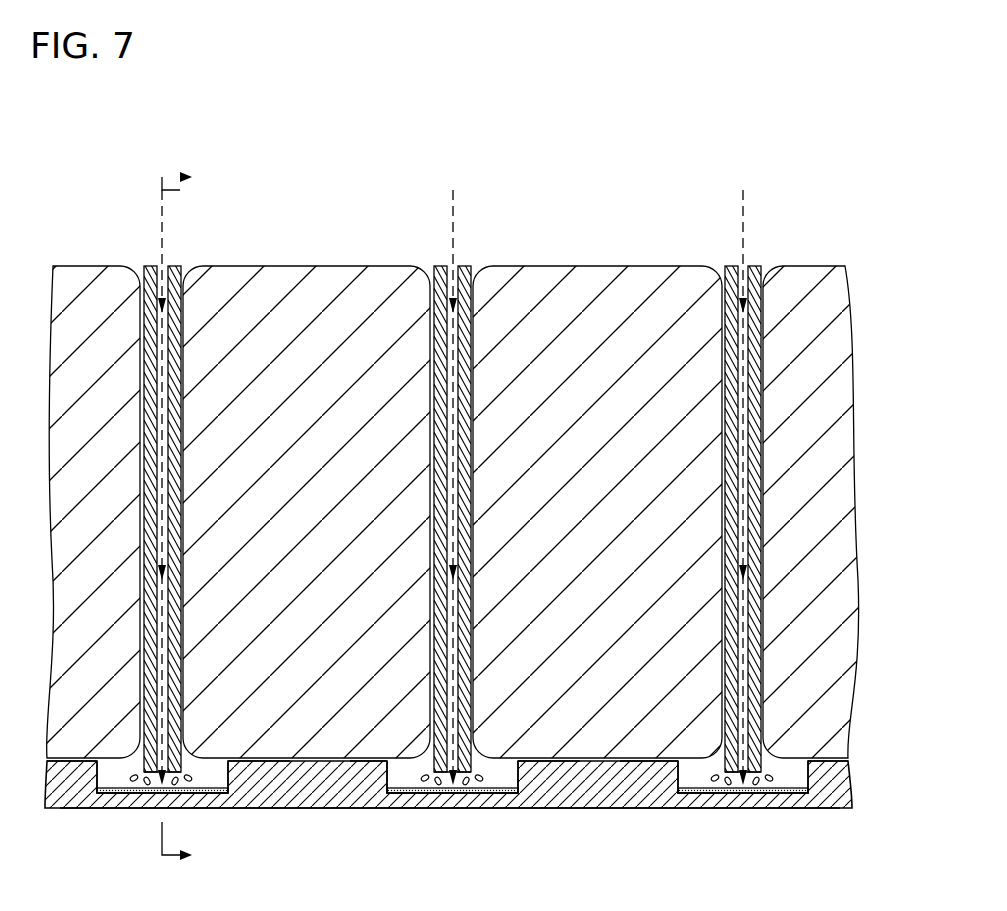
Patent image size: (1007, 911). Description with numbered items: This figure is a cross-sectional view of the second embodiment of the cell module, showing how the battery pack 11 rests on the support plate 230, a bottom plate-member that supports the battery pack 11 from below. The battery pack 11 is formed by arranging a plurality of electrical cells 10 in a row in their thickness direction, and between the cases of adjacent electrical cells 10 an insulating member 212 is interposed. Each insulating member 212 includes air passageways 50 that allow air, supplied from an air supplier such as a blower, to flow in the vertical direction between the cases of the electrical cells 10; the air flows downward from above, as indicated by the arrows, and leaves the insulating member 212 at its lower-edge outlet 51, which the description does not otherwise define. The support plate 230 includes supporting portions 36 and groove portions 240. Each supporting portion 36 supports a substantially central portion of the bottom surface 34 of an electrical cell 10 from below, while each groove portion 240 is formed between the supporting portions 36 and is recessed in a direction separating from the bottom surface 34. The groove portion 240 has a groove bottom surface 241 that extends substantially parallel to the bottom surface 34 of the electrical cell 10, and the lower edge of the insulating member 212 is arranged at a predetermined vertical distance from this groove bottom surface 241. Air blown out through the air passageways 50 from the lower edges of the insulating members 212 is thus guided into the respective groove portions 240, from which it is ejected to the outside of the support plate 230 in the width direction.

The electrical cell 10 is at (465, 471).
The battery pack 11 is at (70, 272).
The insulating member 212 is at (173, 272).
The air passageway 50 is at (158, 375).
The discharge outlet 51 is at (150, 770).
The bottom surface 34 is at (72, 763).
The supporting portion 36 is at (307, 748).
The support plate 230 is at (350, 812).
The groove portion 240 is at (222, 775).
The groove bottom surface 241 is at (118, 782).